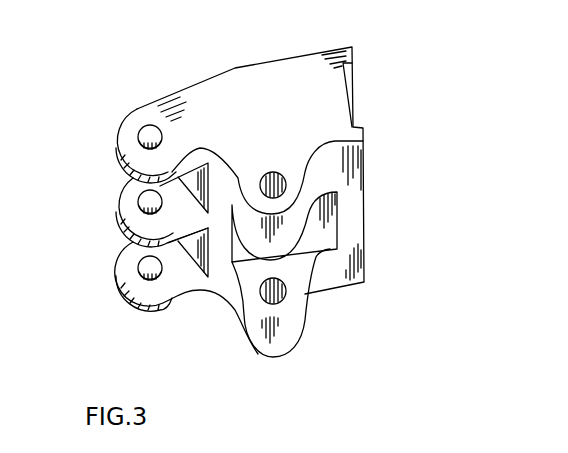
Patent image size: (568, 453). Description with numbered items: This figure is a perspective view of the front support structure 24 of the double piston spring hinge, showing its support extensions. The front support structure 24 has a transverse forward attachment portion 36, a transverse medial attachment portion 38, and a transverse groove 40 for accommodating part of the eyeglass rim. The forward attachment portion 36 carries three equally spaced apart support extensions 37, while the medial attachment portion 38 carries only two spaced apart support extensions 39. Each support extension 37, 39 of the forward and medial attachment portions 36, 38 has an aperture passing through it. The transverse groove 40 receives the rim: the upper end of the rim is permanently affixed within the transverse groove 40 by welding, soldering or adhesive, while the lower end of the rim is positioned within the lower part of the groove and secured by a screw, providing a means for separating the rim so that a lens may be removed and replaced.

The front support structure 24 is at (407, 60).
The transverse forward attachment portion 36 is at (126, 108).
The support extensions 37 is at (127, 138).
The transverse medial attachment portion 38 is at (280, 363).
The support extensions 39 is at (280, 228).
The transverse groove 40 is at (352, 82).